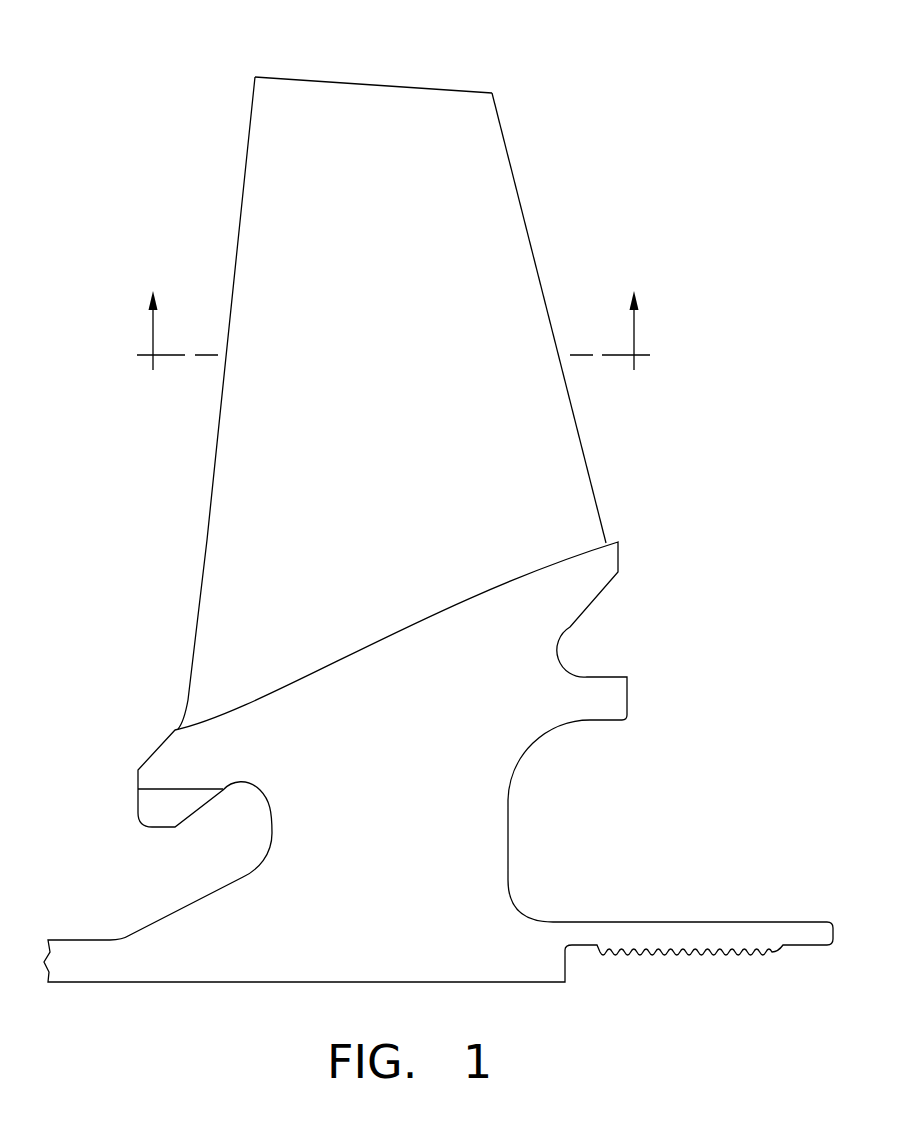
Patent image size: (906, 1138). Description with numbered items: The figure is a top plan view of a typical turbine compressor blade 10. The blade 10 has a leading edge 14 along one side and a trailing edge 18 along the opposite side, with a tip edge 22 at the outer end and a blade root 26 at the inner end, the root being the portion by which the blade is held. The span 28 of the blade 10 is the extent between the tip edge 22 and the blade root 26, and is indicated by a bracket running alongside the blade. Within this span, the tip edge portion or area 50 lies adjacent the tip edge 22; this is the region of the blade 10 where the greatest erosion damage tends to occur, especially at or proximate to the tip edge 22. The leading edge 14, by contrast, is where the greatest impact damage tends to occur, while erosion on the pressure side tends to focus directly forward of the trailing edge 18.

The turbine compressor blade 10 is at (688, 152).
The leading edge 14 is at (213, 447).
The trailing edge 18 is at (580, 437).
The tip edge 22 is at (375, 83).
The blade root 26 is at (465, 720).
The span 28 is at (138, 75).
The tip edge portion of span 50 is at (465, 135).